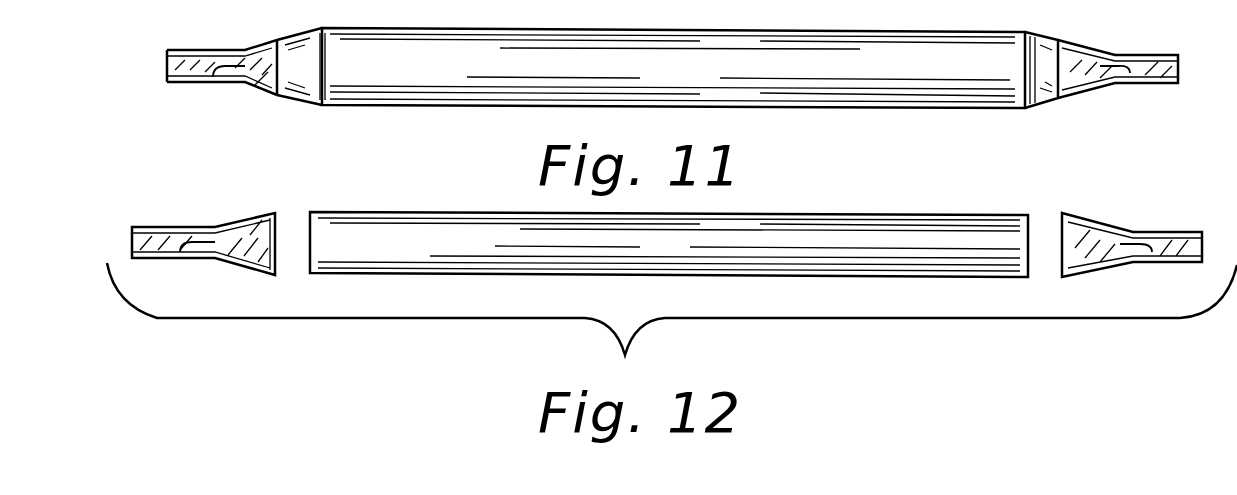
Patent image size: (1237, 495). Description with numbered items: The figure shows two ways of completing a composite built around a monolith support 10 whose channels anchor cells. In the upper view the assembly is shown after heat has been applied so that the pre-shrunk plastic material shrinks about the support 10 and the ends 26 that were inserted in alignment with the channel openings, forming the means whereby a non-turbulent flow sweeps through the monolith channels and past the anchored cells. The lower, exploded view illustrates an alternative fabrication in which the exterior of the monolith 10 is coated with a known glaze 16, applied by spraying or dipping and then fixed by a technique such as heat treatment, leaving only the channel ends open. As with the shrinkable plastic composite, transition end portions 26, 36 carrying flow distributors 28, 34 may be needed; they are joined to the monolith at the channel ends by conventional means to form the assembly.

In FIG. 12, the monolith support 10 is at (413, 256).
In FIG. 11, the glaze 16 is at (700, 78).
In FIG. 12, the glaze 16 is at (490, 213).
In FIG. 11, the transition end portion 26 is at (216, 50).
In FIG. 12, the transition end portion 26 is at (190, 227).
In FIG. 11, the flow distributor 28 is at (225, 70).
In FIG. 12, the flow distributor 28 is at (210, 250).
In FIG. 11, the flow distributor 34 is at (1118, 68).
In FIG. 12, the flow distributor 34 is at (1137, 248).
In FIG. 11, the transition end portion 36 is at (1133, 83).
In FIG. 12, the transition end portion 36 is at (1130, 262).